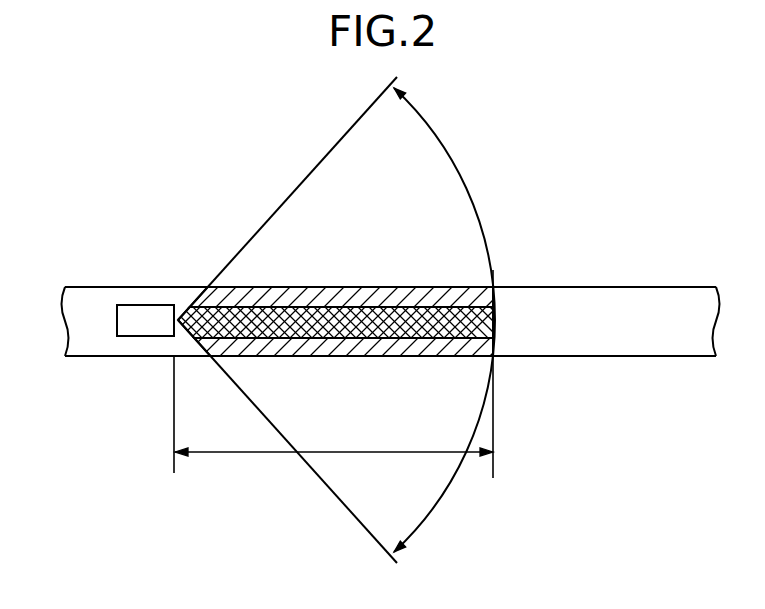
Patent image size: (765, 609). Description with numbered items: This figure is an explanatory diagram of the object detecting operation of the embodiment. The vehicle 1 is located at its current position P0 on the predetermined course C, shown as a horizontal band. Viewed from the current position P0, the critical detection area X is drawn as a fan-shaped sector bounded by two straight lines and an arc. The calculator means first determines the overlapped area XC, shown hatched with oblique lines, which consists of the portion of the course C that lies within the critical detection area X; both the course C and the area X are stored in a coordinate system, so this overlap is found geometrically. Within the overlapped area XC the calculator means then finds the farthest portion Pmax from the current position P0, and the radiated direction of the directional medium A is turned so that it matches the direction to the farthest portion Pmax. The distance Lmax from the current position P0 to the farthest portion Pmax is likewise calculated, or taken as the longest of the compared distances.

The vehicle 1 is at (150, 304).
The predetermined course C is at (645, 292).
The overlapped area XC is at (380, 288).
The directional medium (radiated direction) A is at (372, 340).
The critical detection area X is at (462, 172).
The current position P0 is at (173, 355).
The farthest portion Pmax is at (494, 322).
The distance Lmax is at (250, 455).